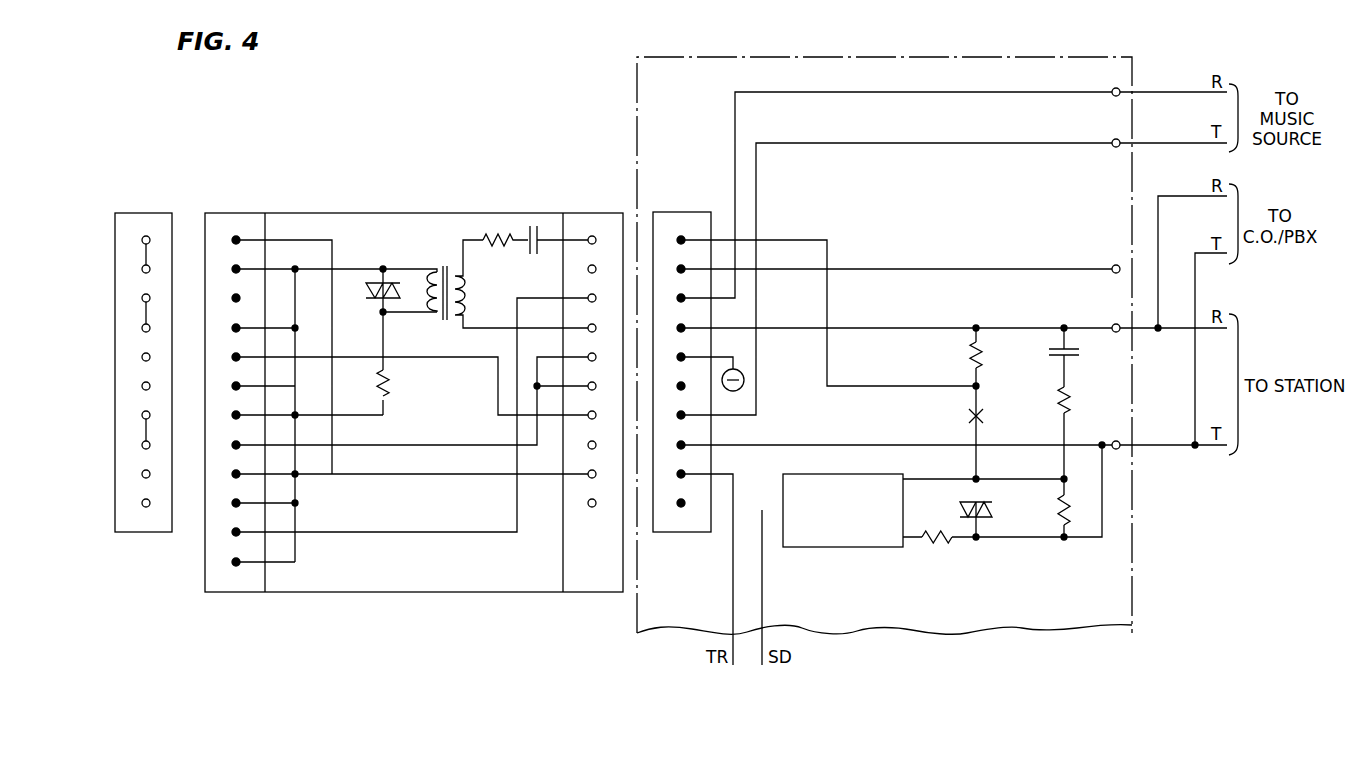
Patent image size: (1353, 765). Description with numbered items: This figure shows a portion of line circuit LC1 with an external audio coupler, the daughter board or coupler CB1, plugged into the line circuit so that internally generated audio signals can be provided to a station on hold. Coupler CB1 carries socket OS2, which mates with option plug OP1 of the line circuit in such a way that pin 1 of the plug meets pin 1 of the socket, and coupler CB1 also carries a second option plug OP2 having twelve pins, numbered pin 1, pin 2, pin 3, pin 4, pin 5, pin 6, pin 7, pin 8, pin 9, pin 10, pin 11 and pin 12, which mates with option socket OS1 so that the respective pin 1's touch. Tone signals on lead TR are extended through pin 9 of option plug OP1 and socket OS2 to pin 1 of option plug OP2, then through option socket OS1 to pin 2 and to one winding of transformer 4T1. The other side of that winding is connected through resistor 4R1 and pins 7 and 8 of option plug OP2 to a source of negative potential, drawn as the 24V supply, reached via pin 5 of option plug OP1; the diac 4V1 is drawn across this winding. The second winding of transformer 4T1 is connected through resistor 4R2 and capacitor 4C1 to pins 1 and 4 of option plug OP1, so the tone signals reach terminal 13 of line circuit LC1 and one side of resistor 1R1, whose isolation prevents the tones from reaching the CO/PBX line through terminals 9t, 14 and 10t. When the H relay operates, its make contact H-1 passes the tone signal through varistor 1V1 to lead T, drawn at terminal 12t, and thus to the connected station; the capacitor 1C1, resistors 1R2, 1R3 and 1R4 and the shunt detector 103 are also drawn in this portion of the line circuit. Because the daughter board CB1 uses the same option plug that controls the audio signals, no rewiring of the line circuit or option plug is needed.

The option socket OS1 is at (162, 212).
The coupler CB1 is at (353, 212).
The second option plug OP2 is at (230, 417).
The socket OS2 is at (606, 593).
The option plug OP1 is at (705, 533).
The line circuit LC1 is at (884, 345).
The diac 4V1 is at (368, 290).
The resistor 4R1 is at (397, 386).
The resistor 4R2 is at (485, 235).
The transformer 4T1 is at (507, 284).
The capacitor 4C1 is at (530, 257).
The resistor 1R1 is at (968, 356).
The resistor 1R2 is at (1073, 400).
The resistor 1R3 is at (1058, 511).
The resistor 1R4 is at (946, 546).
The capacitor 1C1 is at (1083, 352).
The varistor 1V1 is at (959, 511).
The make contact H-1 is at (965, 416).
The shunt detector 103 is at (886, 548).
The battery 24V is at (732, 391).
The terminal 9 9t is at (1114, 83).
The terminal 14 is at (1116, 134).
The terminal 10 10t is at (1116, 260).
The terminal 13 is at (1116, 319).
The terminal 12 12t is at (1116, 436).
The pin 1 is at (236, 240).
The pin 2 is at (236, 269).
The pin 3 is at (236, 298).
The pin 4 is at (236, 328).
The pin 5 is at (236, 357).
The pin 6 is at (236, 386).
The pin 7 is at (236, 415).
The pin 8 is at (236, 445).
The pin 9 is at (236, 474).
The pin 10 is at (236, 503).
The pin 11 is at (236, 532).
The pin 12 is at (236, 562).